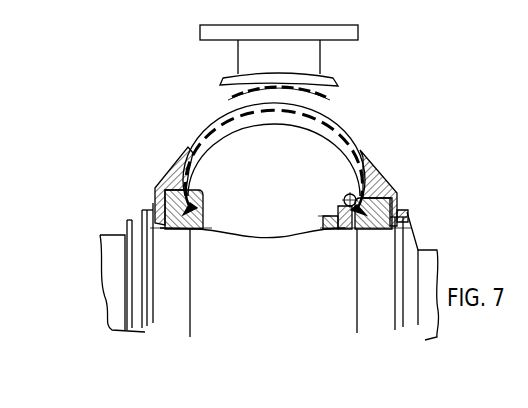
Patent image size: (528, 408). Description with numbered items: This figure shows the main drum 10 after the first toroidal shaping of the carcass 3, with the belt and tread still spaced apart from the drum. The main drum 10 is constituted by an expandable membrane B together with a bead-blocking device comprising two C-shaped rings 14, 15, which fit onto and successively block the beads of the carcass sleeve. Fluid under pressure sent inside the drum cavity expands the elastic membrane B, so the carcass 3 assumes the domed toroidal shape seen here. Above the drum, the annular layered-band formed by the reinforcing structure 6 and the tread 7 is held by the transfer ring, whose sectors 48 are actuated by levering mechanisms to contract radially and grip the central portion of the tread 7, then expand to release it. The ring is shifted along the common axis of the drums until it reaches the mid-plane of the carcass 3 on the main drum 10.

The main drum 10 is at (436, 196).
The sectors 48 is at (313, 59).
The tread 7 is at (228, 84).
The reinforcing structure 6 is at (325, 93).
The single-ply radial carcass 3 is at (237, 111).
The expandable membrane B is at (248, 112).
The C-shaped ring 14 is at (163, 175).
The C-shaped ring 15 is at (376, 169).